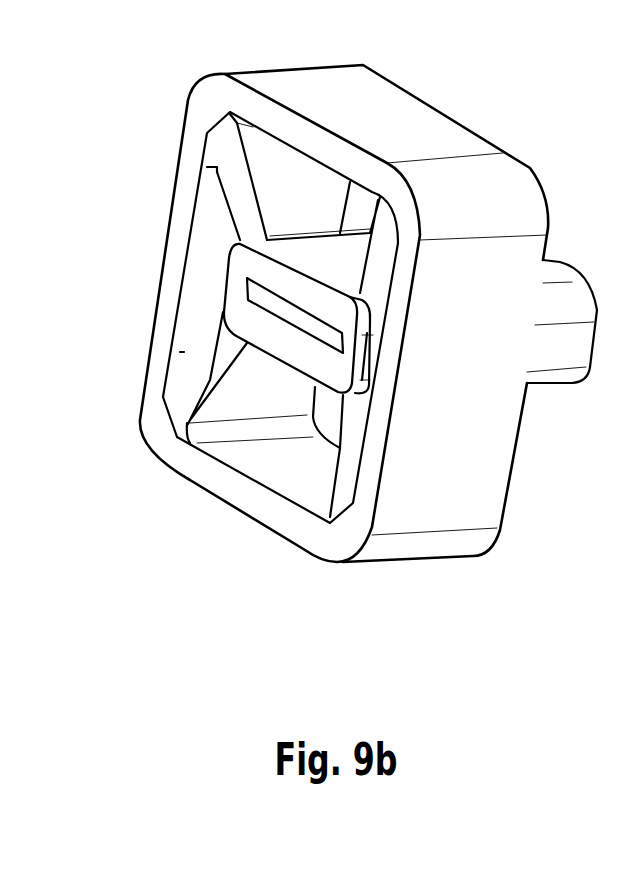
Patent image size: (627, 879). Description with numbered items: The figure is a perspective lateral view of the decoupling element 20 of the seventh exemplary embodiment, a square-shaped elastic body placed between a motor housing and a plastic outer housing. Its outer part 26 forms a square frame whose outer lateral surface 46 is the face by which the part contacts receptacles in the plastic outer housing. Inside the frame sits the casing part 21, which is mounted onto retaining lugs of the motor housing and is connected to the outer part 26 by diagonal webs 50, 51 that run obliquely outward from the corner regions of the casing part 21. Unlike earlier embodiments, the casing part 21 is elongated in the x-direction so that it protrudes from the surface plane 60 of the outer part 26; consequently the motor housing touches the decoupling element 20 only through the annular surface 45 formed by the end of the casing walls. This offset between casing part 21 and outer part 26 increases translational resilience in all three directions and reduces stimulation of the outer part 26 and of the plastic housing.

The decoupling element 20 is at (427, 120).
The outer part 26 is at (427, 120).
The casing part 21 is at (287, 350).
The annular surface 45 is at (602, 335).
The outer lateral surface 46 is at (523, 213).
The diagonal web 50 is at (227, 153).
The diagonal web 51 is at (180, 395).
The surface plane 60 is at (508, 477).